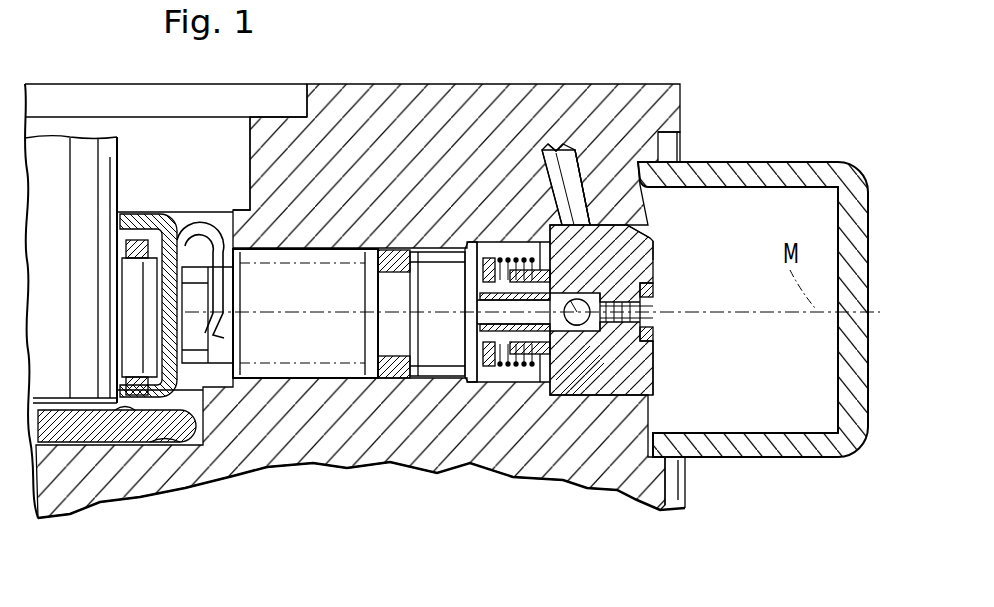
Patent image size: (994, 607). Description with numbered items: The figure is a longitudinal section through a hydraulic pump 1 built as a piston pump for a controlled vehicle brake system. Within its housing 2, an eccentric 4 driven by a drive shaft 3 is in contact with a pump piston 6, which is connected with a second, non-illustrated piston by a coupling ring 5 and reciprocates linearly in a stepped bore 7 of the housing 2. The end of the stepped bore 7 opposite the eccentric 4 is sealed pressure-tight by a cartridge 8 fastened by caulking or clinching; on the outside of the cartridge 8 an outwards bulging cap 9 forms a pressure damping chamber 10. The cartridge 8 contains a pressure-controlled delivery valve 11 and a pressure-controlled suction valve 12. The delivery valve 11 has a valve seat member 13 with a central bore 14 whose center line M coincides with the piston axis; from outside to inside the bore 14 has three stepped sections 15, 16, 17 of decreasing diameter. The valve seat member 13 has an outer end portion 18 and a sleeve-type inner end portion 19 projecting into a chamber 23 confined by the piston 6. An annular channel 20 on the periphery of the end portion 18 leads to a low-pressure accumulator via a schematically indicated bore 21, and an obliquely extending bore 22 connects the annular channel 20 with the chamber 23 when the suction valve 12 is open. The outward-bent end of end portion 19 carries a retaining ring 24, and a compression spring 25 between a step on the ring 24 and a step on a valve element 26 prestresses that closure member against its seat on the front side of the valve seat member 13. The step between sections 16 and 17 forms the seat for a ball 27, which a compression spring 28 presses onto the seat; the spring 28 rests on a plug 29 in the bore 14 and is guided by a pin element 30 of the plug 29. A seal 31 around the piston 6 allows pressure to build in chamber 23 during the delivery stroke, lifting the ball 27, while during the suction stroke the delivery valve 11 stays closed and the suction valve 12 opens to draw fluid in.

The hydraulic pump 1 is at (704, 126).
The housing 2 is at (60, 493).
The drive shaft 3 is at (50, 157).
The eccentric 4 is at (93, 432).
The coupling ring 5 is at (190, 222).
The pump piston 6 is at (300, 350).
The stepped bore 7 is at (477, 247).
The cartridge 8 is at (657, 352).
The cap 9 is at (778, 178).
The pressure damping chamber 10 is at (803, 404).
The delivery valve 11 is at (572, 392).
The suction valve 12 is at (500, 253).
The valve seat member 13 is at (657, 247).
The central bore 14 is at (640, 288).
The outsidemost section 15 is at (652, 333).
The mid-section 16 is at (583, 398).
The innermost section 17 is at (470, 328).
The outer end portion 18 is at (655, 240).
The inner end portion 19 is at (470, 296).
The annular channel 20 is at (583, 222).
The bore 21 is at (556, 150).
The bore 22 is at (548, 395).
The chamber 23 is at (495, 385).
The retaining ring 24 is at (473, 382).
The compression spring 25 is at (475, 240).
The valve element 26 is at (497, 382).
The ball 27 is at (530, 247).
The compression spring 28 is at (598, 235).
The plug 29 is at (648, 300).
The pin element 30 is at (603, 396).
The seal 31 is at (394, 380).